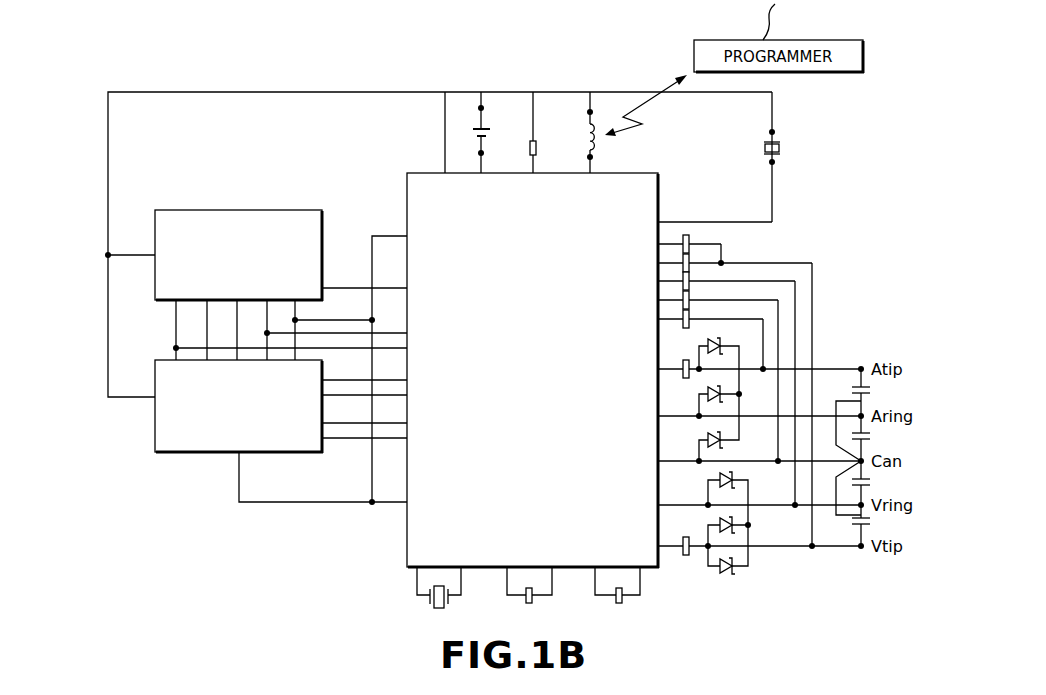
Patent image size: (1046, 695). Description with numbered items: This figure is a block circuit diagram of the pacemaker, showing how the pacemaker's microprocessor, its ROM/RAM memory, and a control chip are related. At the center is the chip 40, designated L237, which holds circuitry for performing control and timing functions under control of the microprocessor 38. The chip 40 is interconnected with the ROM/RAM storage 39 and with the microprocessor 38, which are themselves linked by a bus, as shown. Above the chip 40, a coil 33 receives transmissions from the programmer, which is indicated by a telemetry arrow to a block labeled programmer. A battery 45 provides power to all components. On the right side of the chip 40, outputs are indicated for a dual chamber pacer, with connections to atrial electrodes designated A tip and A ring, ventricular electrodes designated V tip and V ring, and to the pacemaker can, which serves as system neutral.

The coil 33 is at (585, 131).
The microprocessor 38 is at (188, 453).
The ROM/RAM storage 39 is at (229, 210).
The chip 40 is at (407, 553).
The battery 45 is at (474, 129).